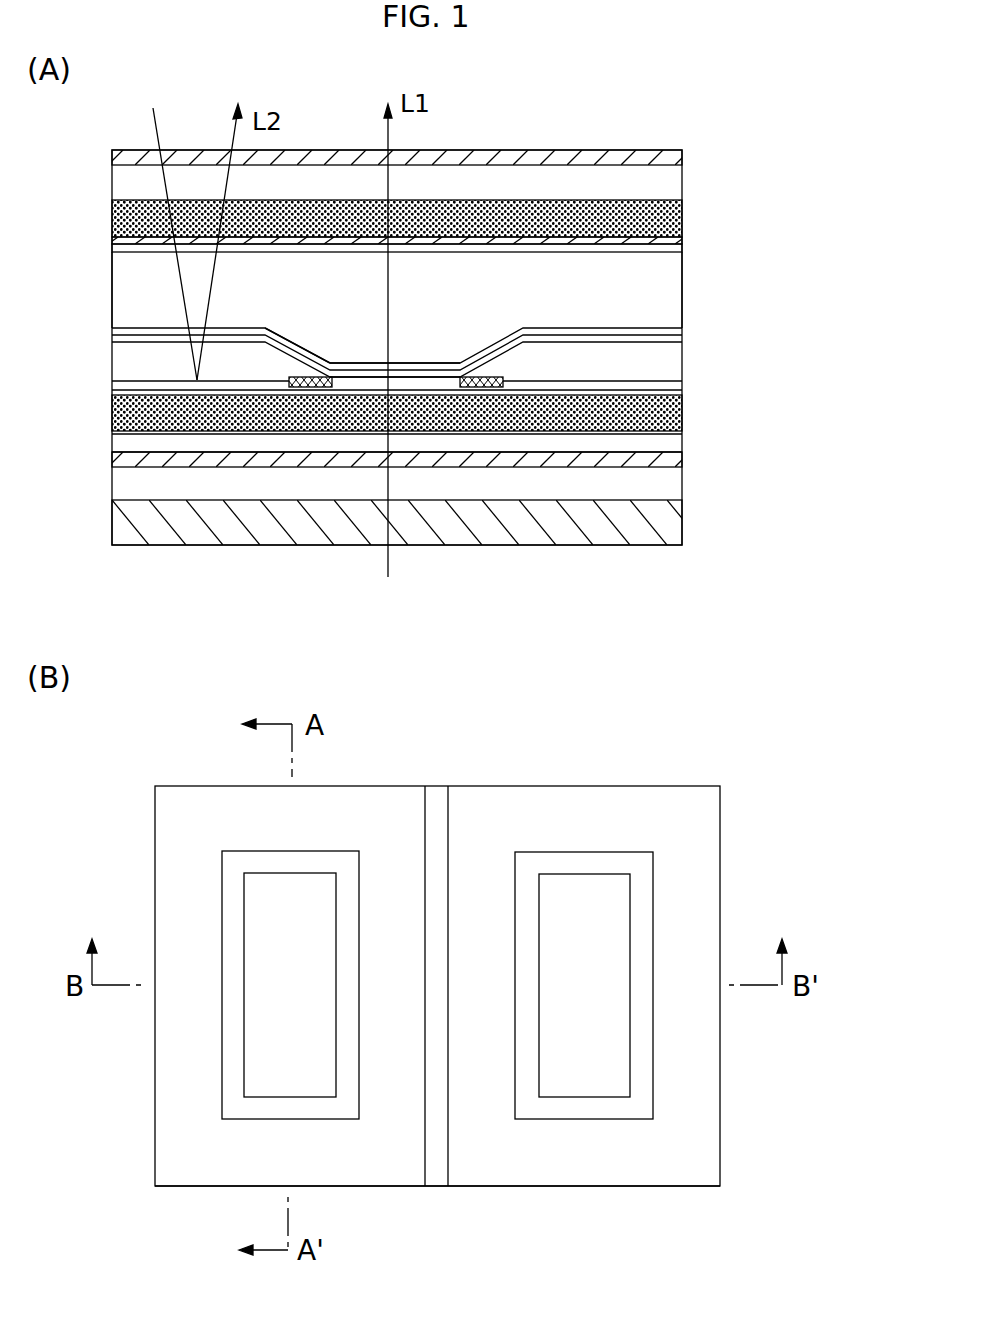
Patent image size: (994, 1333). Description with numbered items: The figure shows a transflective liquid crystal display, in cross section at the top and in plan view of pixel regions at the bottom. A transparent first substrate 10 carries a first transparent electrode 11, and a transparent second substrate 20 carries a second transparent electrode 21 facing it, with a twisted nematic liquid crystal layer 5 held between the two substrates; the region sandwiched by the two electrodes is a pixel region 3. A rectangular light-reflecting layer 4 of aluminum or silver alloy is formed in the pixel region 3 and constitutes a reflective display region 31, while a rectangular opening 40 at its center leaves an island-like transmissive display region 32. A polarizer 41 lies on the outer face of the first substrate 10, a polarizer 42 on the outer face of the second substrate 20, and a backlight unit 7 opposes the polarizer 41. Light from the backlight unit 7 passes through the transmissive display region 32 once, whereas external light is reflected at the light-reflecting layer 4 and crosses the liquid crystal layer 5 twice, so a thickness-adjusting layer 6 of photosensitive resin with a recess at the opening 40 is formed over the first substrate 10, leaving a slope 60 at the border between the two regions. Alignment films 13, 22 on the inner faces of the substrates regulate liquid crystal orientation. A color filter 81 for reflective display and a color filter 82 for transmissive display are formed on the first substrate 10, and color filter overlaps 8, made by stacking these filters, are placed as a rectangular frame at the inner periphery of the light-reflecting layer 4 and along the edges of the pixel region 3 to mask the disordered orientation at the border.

The pixel region 3 is at (732, 779).
The light-reflecting layer 4 is at (682, 397).
The liquid crystal layer 5 is at (672, 293).
The thickness-adjusting layer 6 is at (682, 366).
The backlight unit 7 is at (682, 522).
The color filter overlap 8 is at (500, 377).
The first substrate 10 is at (682, 428).
The first transparent electrode 11 is at (682, 341).
The alignment film 13 is at (682, 327).
The second substrate 20 is at (676, 212).
The second transparent electrode 21 is at (682, 241).
The alignment film 22 is at (682, 254).
The reflective display region 31 is at (437, 1161).
The transmissive display region 32 is at (437, 985).
The opening 40 is at (355, 363).
The polarizer 41 is at (682, 462).
The polarizer 42 is at (682, 159).
The slope 60 is at (303, 347).
The color filter for reflective display 81 is at (682, 386).
The color filter for transmissive display 82 is at (430, 377).